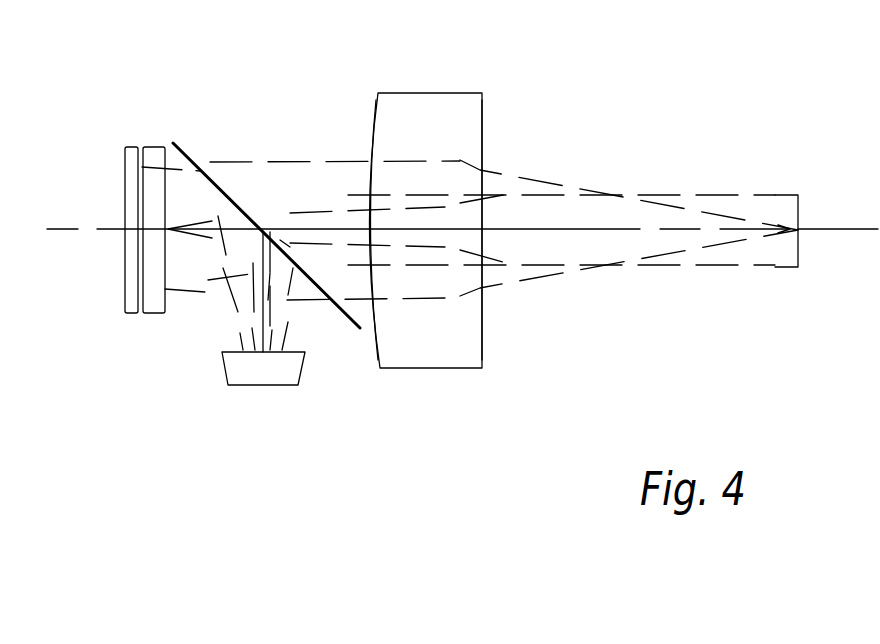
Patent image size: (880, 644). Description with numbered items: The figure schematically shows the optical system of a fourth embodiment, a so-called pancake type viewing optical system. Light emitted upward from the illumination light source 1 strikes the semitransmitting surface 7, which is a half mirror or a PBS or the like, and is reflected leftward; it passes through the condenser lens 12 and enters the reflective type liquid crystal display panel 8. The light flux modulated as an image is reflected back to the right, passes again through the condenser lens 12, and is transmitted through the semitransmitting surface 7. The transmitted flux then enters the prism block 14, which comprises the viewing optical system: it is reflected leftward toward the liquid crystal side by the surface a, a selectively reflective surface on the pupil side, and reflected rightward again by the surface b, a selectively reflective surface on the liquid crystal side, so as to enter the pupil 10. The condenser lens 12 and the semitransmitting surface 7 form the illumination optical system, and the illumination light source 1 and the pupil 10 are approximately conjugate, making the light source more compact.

The illumination light source 1 is at (263, 385).
The semitransmitting surface 7 is at (187, 149).
The reflective type liquid crystal display panel 8 is at (125, 277).
The condenser lens 12 is at (153, 303).
The prism block 14 is at (442, 348).
The surface a is at (482, 124).
The surface b is at (374, 121).
The pupil 10 is at (798, 247).